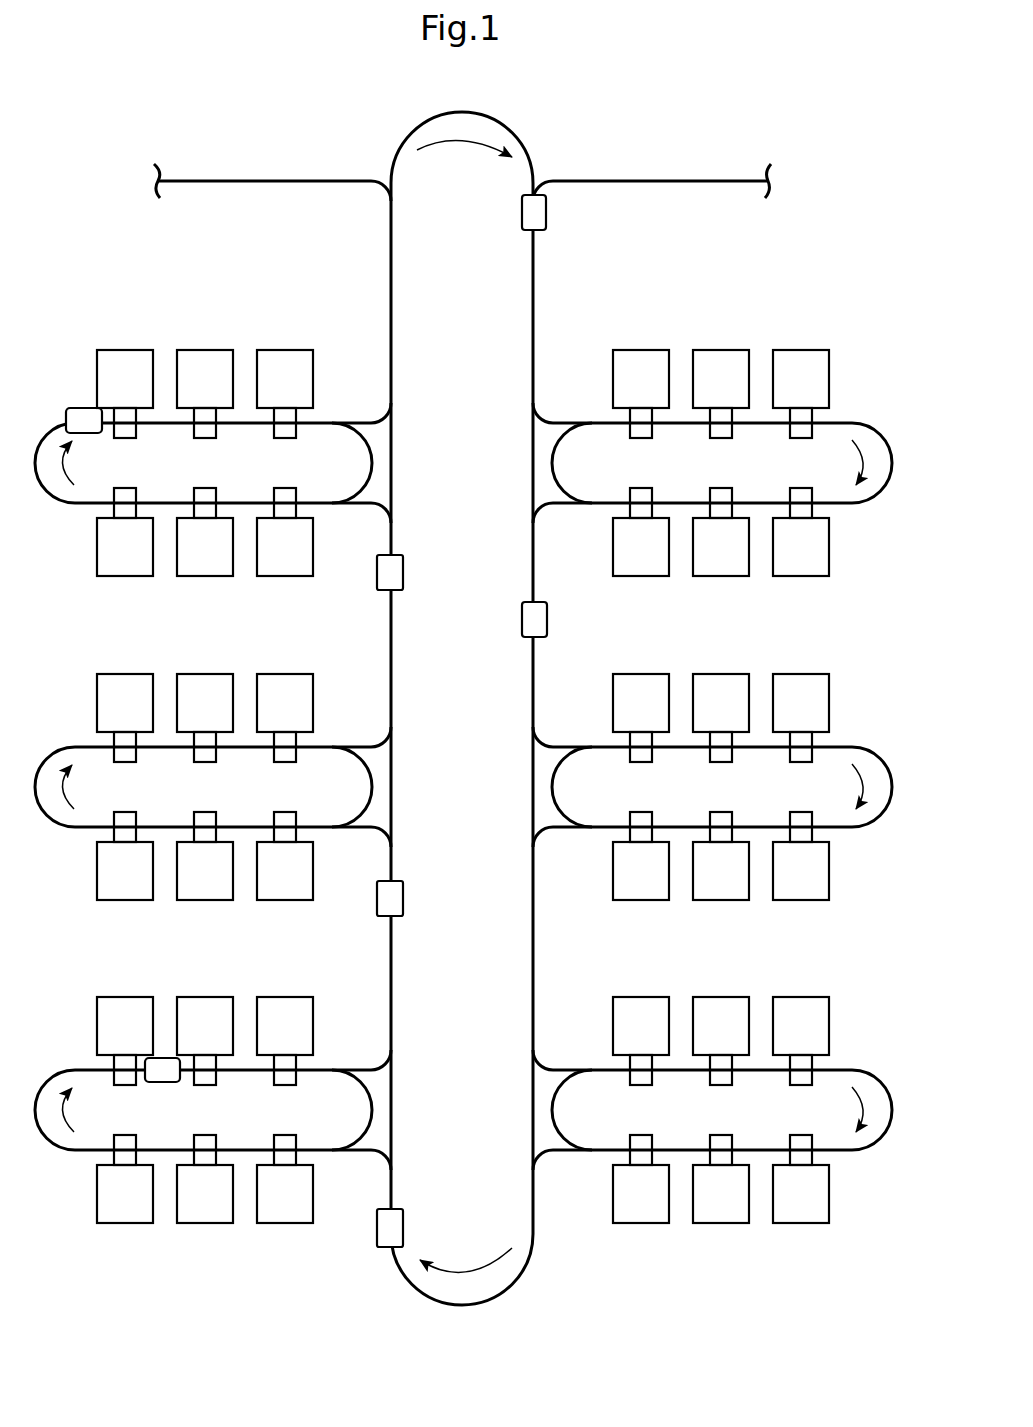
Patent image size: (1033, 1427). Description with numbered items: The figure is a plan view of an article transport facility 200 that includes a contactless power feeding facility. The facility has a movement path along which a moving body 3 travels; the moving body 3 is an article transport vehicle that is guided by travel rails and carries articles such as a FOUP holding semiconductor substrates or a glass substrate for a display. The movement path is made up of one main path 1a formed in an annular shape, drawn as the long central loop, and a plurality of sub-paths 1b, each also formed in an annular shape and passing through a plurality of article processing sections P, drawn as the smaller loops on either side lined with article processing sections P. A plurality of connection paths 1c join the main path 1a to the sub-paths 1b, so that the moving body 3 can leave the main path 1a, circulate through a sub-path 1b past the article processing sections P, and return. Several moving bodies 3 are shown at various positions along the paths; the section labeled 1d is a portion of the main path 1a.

The article transport facility 200 is at (687, 123).
The main path 1a is at (545, 148).
The sub-path 1b is at (92, 505).
The connection path 1c is at (378, 418).
The straight conveyor section 1d is at (532, 577).
The moving body 3 is at (546, 212).
The article processing section P is at (285, 350).